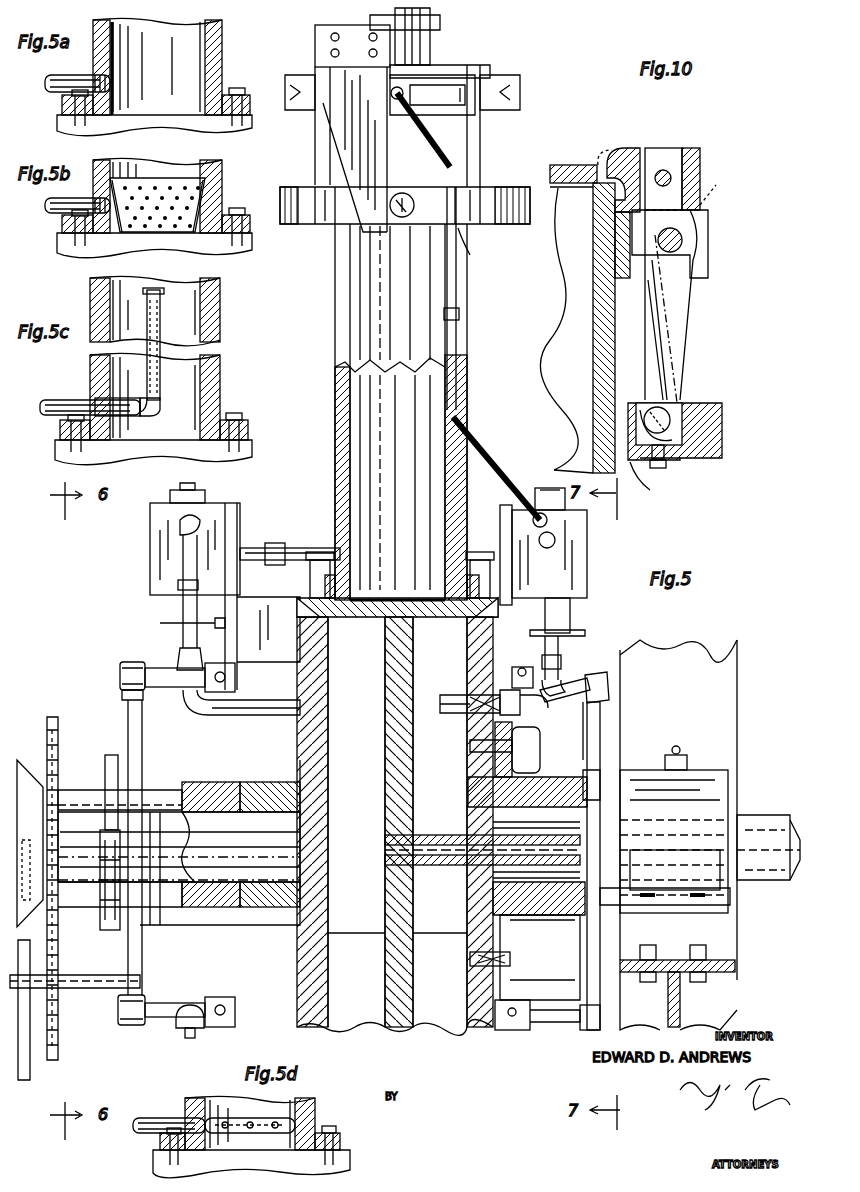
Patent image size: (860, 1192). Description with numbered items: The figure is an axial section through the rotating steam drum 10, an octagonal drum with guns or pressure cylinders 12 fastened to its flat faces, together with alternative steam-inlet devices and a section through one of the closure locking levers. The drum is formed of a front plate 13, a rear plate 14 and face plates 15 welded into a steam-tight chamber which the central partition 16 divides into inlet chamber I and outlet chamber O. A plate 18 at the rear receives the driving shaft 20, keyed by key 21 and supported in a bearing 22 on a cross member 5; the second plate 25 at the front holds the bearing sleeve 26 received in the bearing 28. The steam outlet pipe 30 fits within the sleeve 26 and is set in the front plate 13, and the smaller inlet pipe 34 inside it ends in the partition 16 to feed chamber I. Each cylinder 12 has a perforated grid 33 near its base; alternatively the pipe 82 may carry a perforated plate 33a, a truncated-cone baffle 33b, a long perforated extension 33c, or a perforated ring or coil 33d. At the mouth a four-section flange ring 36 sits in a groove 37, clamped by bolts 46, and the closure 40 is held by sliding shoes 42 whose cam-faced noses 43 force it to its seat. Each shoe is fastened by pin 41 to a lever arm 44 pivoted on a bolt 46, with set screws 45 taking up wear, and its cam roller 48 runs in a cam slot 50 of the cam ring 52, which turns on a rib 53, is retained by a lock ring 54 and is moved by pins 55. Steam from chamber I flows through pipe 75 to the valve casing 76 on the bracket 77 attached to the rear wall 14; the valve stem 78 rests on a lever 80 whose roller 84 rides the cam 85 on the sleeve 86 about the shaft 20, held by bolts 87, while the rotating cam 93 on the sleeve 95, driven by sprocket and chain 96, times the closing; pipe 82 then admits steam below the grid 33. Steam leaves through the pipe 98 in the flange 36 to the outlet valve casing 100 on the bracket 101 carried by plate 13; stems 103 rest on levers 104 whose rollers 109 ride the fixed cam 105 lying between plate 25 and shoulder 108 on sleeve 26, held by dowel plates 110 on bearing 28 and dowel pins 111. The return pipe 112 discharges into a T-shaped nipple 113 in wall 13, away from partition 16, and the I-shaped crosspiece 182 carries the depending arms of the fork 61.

In FIG. 5, the cross member 5 is at (690, 1005).
In FIG. 5, the rotating steam drum 10 is at (312, 1028).
In FIG. 5A, the gun or pressure cylinder 12 is at (222, 60).
In FIG. 5B, the gun or pressure cylinder 12 is at (222, 178).
In FIG. 5C, the gun or pressure cylinder 12 is at (220, 380).
In FIG. 5D, the gun or pressure cylinder 12 is at (315, 1115).
In FIG. 10, the gun or pressure cylinder 12 is at (595, 225).
In FIG. 5, the gun or pressure cylinder 12 is at (338, 452).
In FIG. 5, the front plate 13 is at (467, 982).
In FIG. 5, the rear plate 14 is at (328, 990).
In FIG. 5A, the face plates 15 is at (252, 127).
In FIG. 5B, the face plates 15 is at (252, 247).
In FIG. 5C, the face plates 15 is at (252, 443).
In FIG. 5D, the face plates 15 is at (350, 1154).
In FIG. 5, the face plates 15 is at (420, 618).
In FIG. 5, the central partition 16 is at (413, 736).
In FIG. 5, the plate 18 is at (248, 782).
In FIG. 5, the driving shaft 20 is at (206, 907).
In FIG. 5, the key 21 is at (258, 912).
In FIG. 5, the bearing 22 is at (25, 760).
In FIG. 5, the second plate 25 is at (528, 777).
In FIG. 5, the bearing sleeve 26 is at (548, 807).
In FIG. 5, the bearing 28 is at (720, 770).
In FIG. 5, the steam outlet pipe 30 is at (600, 770).
In FIG. 5, the perforated plate or grid 33 is at (410, 535).
In FIG. 5A, the perforated plate 33a is at (118, 75).
In FIG. 5B, the perforated ring or baffle 33b is at (222, 196).
In FIG. 5C, the perforated extension 33c is at (165, 322).
In FIG. 5D, the perforated ring or coil 33d is at (275, 1118).
In FIG. 5, the steam inlet pipe 34 is at (440, 835).
In FIG. 10, the flange ring 36 is at (708, 222).
In FIG. 5, the flange ring 36 is at (490, 80).
In FIG. 10, the groove 37 is at (612, 260).
In FIG. 10, the cap or closure 40 is at (570, 165).
In FIG. 10, the pin 41 is at (665, 170).
In FIG. 10, the sliding shoes or clamps 42 is at (700, 170).
In FIG. 10, the nose 43 is at (622, 148).
In FIG. 10, the lever arm 44 is at (682, 310).
In FIG. 5, the lever arm 44 is at (482, 142).
In FIG. 10, the set screws 45 is at (716, 185).
In FIG. 10, the bolts 46 is at (684, 240).
In FIG. 5, the bolts 46 is at (465, 90).
In FIG. 10, the cam roller 48 is at (670, 420).
In FIG. 10, the cam slot 50 is at (672, 410).
In FIG. 10, the cam ring 52 is at (722, 422).
In FIG. 5, the cam ring 52 is at (515, 224).
In FIG. 10, the rib 53 is at (640, 462).
In FIG. 10, the lock ring 54 is at (665, 345).
In FIG. 5, the lock ring 54 is at (466, 298).
In FIG. 5, the pins 55 is at (402, 217).
In FIG. 5, the fork 61 is at (343, 135).
In FIG. 5, the pipe 75 is at (230, 716).
In FIG. 5, the valve casing 76 is at (205, 505).
In FIG. 5, the bracket 77 is at (240, 520).
In FIG. 5, the valve stem 78 is at (178, 656).
In FIG. 5, the lever 80 is at (172, 688).
In FIG. 5A, the pipe 82 is at (62, 75).
In FIG. 5B, the pipe 82 is at (55, 198).
In FIG. 5C, the pipe 82 is at (52, 400).
In FIG. 5D, the pipe 82 is at (150, 1118).
In FIG. 5, the pipe 82 is at (310, 548).
In FIG. 5, the roller 84 is at (133, 662).
In FIG. 5, the cam 85 is at (142, 748).
In FIG. 5, the sleeve 86 is at (210, 782).
In FIG. 5, the bolts 87 is at (95, 988).
In FIG. 5, the cam 93 is at (110, 755).
In FIG. 5, the sleeve 95 is at (98, 800).
In FIG. 5, the sprocket and chain 96 is at (58, 948).
In FIG. 5, the pipe 98 is at (428, 135).
In FIG. 5, the outlet valve casing 100 is at (587, 549).
In FIG. 5, the bracket 101 is at (500, 523).
In FIG. 5, the valve stems 103 is at (545, 660).
In FIG. 5, the pivoted levers 104 is at (568, 680).
In FIG. 5, the fixed cam 105 is at (580, 970).
In FIG. 5, the shoulder 108 is at (620, 770).
In FIG. 5, the rollers 109 is at (605, 672).
In FIG. 5, the dowel plates 110 is at (732, 898).
In FIG. 5, the dowel pins 111 is at (600, 920).
In FIG. 5, the return pipe 112 is at (535, 712).
In FIG. 5, the nipple 113 is at (485, 695).
In FIG. 5, the I-shaped crosspiece 182 is at (415, 30).